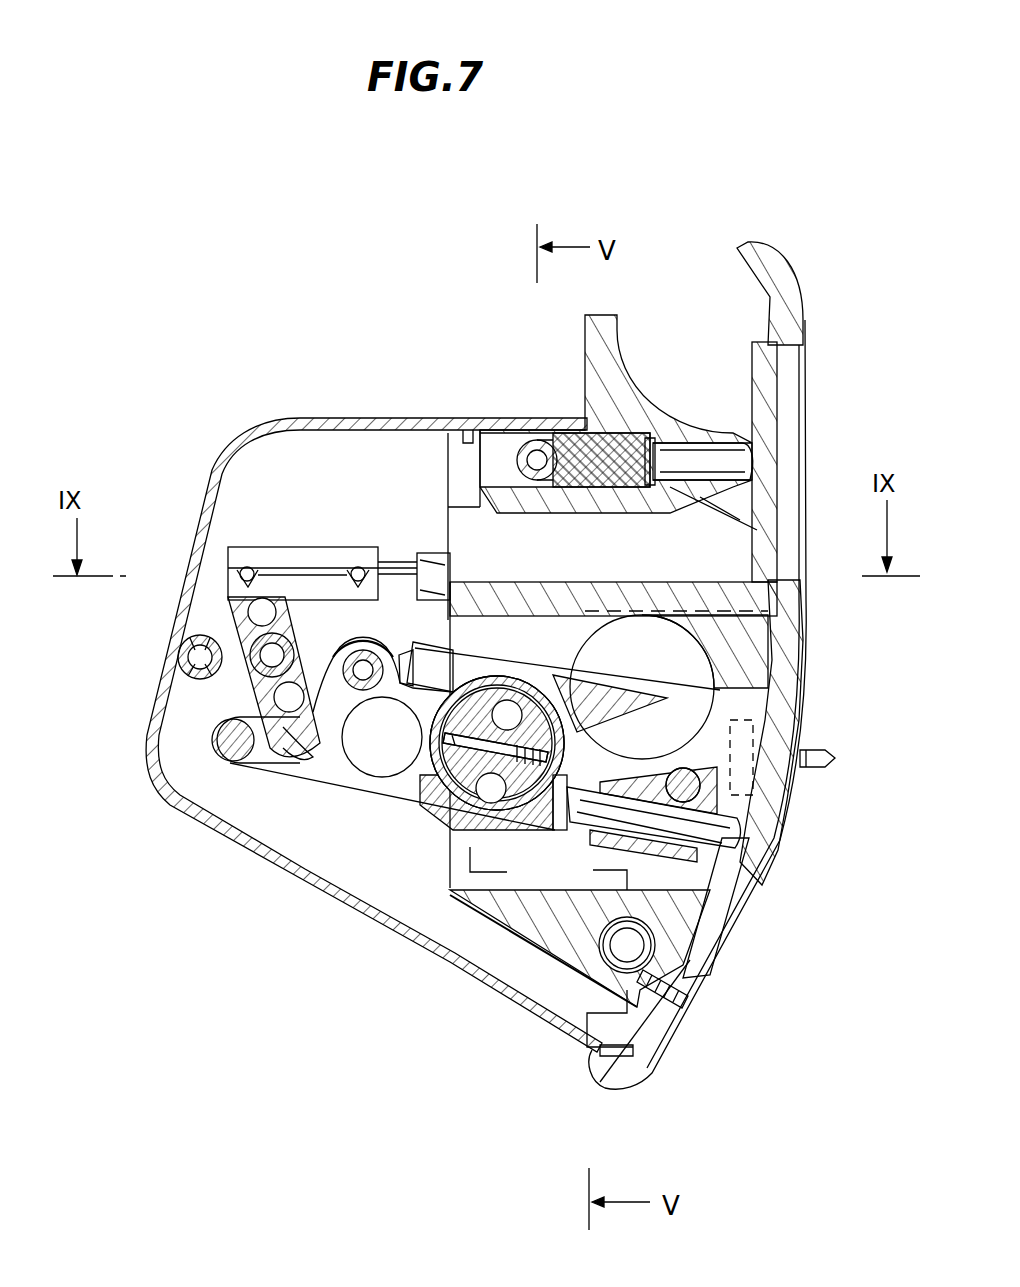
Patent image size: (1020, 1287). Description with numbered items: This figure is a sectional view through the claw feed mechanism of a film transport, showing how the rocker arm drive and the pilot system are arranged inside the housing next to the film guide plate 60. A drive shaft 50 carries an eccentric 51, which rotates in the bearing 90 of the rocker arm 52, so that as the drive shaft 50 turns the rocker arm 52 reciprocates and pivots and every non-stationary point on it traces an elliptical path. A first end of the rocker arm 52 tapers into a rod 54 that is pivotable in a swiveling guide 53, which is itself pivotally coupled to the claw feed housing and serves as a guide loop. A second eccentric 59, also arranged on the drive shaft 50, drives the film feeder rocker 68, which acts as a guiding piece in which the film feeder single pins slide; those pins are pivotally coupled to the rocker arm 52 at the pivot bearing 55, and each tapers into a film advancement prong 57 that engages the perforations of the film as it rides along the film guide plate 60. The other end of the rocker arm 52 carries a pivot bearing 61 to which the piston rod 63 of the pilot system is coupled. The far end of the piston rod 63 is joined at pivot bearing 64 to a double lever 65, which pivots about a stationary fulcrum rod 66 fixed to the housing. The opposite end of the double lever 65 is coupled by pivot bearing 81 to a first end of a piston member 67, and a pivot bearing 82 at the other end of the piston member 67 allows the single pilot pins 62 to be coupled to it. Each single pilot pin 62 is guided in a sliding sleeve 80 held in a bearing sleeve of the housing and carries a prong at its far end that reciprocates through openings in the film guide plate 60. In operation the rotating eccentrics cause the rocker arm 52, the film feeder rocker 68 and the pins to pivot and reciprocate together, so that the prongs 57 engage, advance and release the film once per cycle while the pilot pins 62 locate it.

The drive shaft 50 is at (446, 802).
The eccentric 51 is at (473, 800).
The rocker arm 52 is at (337, 773).
The swiveling guide 53 is at (660, 850).
The rod 54 is at (745, 875).
The pivot bearing 55 is at (355, 685).
The film advancement prong 57 is at (818, 770).
The second eccentric 59 is at (440, 797).
The film guide plate 60 is at (792, 632).
The pivot bearing 61 is at (233, 762).
The single pilot pin 62 is at (397, 567).
The piston rod 63 is at (268, 752).
The pivot bearing 64 is at (320, 760).
The double lever 65 is at (233, 626).
The stationary fulcrum rod 66 is at (253, 673).
The piston member 67 is at (303, 544).
The film feeder rocker 68 is at (433, 658).
The sliding sleeve 80 is at (435, 563).
The pivot bearing 81 is at (248, 568).
The pivot bearing 82 is at (360, 572).
The bearing 90 is at (527, 800).